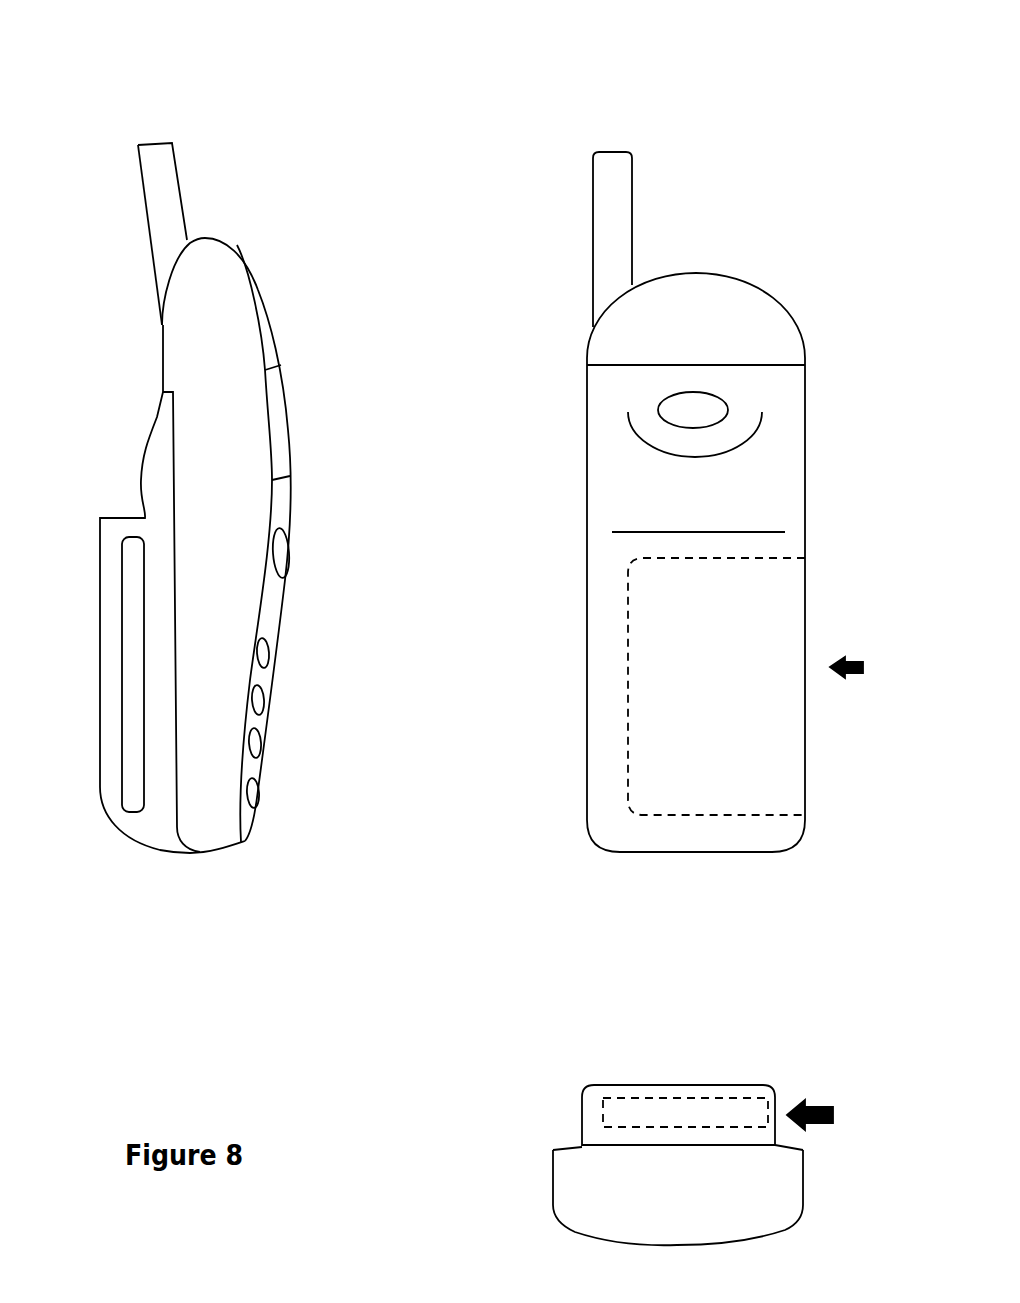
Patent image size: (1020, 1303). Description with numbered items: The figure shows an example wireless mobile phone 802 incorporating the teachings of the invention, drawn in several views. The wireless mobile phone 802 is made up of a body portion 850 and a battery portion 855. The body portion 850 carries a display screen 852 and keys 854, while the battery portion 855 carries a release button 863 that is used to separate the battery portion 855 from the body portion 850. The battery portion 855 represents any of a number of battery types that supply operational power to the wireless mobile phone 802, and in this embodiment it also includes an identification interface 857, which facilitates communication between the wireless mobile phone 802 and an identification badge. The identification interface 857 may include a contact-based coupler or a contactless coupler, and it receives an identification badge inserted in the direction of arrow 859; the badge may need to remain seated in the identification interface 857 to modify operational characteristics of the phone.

The wireless mobile phone 802 is at (460, 67).
The body portion 850 is at (227, 237).
The display screen 852 is at (288, 400).
The keys 854 is at (272, 652).
The battery portion 855 is at (158, 415).
The identification interface 857 is at (137, 660).
The arrow 859 is at (852, 678).
The release button 863 is at (705, 396).